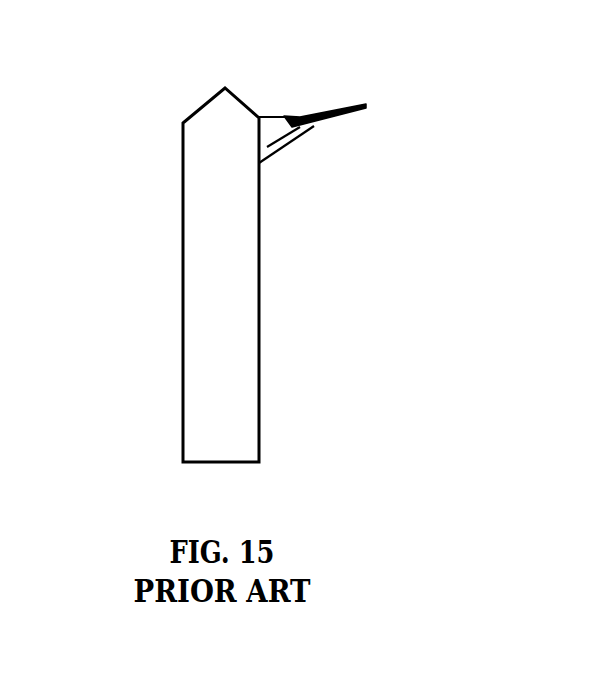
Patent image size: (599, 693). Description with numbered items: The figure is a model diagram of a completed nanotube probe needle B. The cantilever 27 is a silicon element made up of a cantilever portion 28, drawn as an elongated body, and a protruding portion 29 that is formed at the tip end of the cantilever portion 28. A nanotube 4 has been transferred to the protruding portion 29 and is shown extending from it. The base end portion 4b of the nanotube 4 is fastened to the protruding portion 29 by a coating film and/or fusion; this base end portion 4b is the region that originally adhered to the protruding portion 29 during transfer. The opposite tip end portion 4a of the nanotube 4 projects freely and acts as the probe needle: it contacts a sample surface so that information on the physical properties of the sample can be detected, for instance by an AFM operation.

The cantilever 27 is at (265, 238).
The cantilever portion 28 is at (202, 247).
The nanotube 4 is at (327, 110).
The tip end portion 4a is at (365, 117).
The base end portion 4b is at (285, 117).
The protruding portion 29 is at (268, 133).
The nanotube probe needle B is at (333, 396).